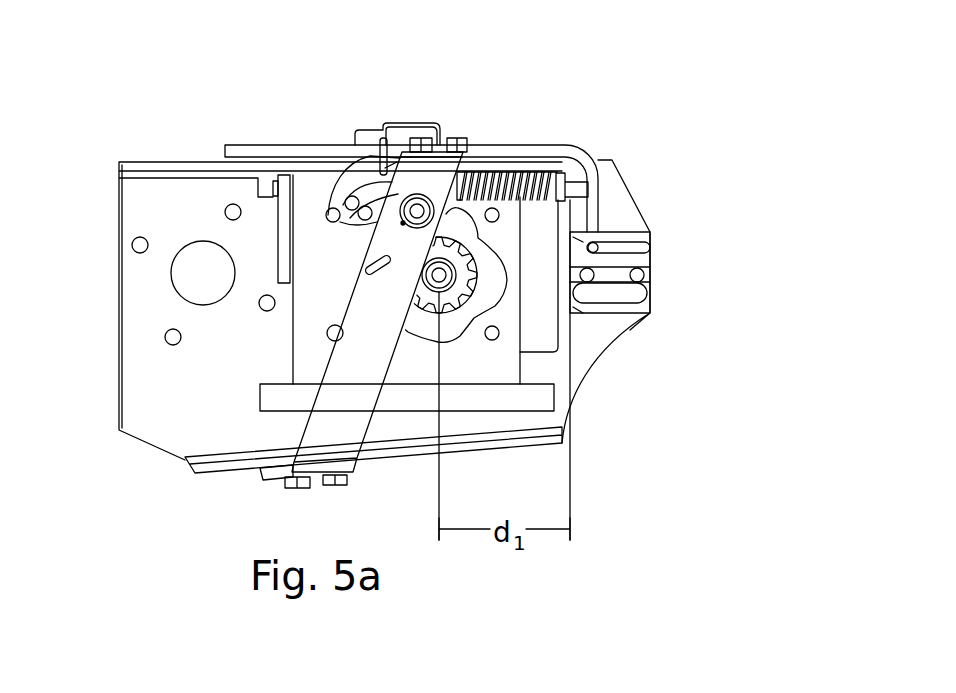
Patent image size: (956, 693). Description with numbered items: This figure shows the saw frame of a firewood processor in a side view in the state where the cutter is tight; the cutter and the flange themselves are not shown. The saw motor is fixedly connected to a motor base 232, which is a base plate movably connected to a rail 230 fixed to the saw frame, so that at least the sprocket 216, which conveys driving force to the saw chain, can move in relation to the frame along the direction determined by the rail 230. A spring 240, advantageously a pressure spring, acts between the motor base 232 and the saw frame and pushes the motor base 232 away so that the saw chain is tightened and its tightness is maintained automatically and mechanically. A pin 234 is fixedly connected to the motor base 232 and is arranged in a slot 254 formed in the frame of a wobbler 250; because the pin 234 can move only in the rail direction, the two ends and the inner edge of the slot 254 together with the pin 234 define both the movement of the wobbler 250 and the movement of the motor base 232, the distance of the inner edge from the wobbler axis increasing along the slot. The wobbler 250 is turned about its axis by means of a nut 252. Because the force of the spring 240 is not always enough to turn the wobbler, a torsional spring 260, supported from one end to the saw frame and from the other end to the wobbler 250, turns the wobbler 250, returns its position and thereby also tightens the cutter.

The sprocket 216 is at (477, 270).
The rail 230 is at (535, 398).
The motor base 232 is at (497, 353).
The pin 234 is at (350, 198).
The spring 240 is at (513, 173).
The wobbler 250 is at (357, 175).
The nut 252 is at (417, 196).
The slot 254 is at (380, 176).
The torsional spring 260 is at (384, 140).